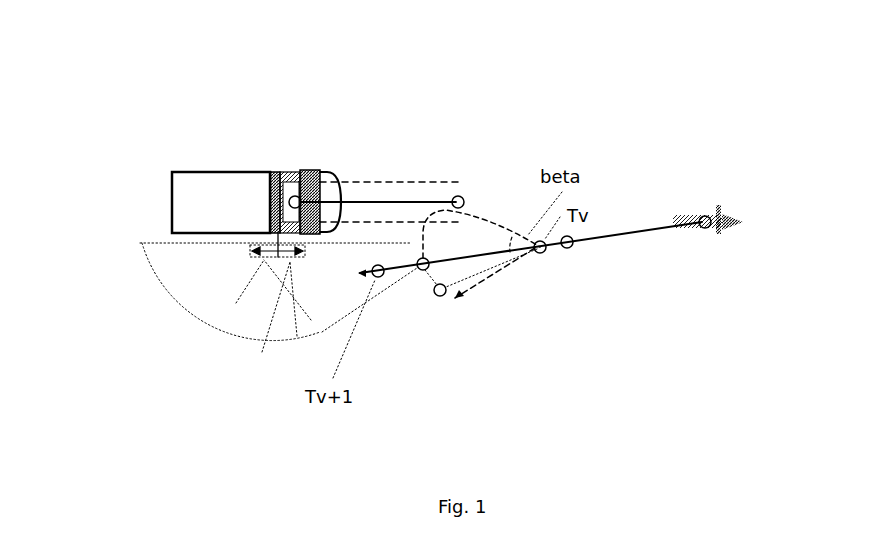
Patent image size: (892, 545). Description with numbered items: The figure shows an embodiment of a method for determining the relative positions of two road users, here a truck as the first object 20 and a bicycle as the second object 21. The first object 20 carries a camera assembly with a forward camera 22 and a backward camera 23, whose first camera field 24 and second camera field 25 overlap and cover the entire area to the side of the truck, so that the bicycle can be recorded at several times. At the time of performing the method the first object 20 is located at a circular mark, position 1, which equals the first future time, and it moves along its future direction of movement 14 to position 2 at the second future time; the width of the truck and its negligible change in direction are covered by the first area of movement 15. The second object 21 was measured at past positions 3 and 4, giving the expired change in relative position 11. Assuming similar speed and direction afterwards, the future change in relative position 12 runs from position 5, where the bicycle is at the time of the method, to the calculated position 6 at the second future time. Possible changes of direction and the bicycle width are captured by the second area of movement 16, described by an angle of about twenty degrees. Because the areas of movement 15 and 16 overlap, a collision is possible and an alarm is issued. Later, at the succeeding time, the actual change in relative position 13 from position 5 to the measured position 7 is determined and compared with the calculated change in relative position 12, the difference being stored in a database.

The measured position of first object Tv=T1 1 is at (292, 193).
The calculated position of first object T2 2 is at (462, 194).
The measured relative position of second object t1 3 is at (726, 237).
The measured relative position of second object t2 4 is at (572, 249).
The calculated relative position of second object Tv=T1 5 is at (546, 252).
The calculated relative position of second object T2 6 is at (419, 270).
The measured relative position second object T2 7 is at (438, 300).
The expired change in relative position (t1→t2) of the second object 11 is at (634, 242).
The future calculated change in relative position (T1→T2) of the second object 12 is at (477, 251).
The determined actual change in relative position (T1→T2) of the second object 13 is at (468, 292).
The future direction of movement (T1→T2) of the first object 14 is at (353, 212).
The first area of movement of first object T1→T2 15 is at (366, 188).
The second area of movement of second object T1→T2 16 is at (445, 300).
The first object 20 is at (257, 216).
The second object 21 is at (701, 207).
The forward camera 22 is at (339, 308).
The backward camera 23 is at (244, 297).
The first camera field of first camera 24 is at (342, 316).
The second camera field of second camera 25 is at (214, 311).